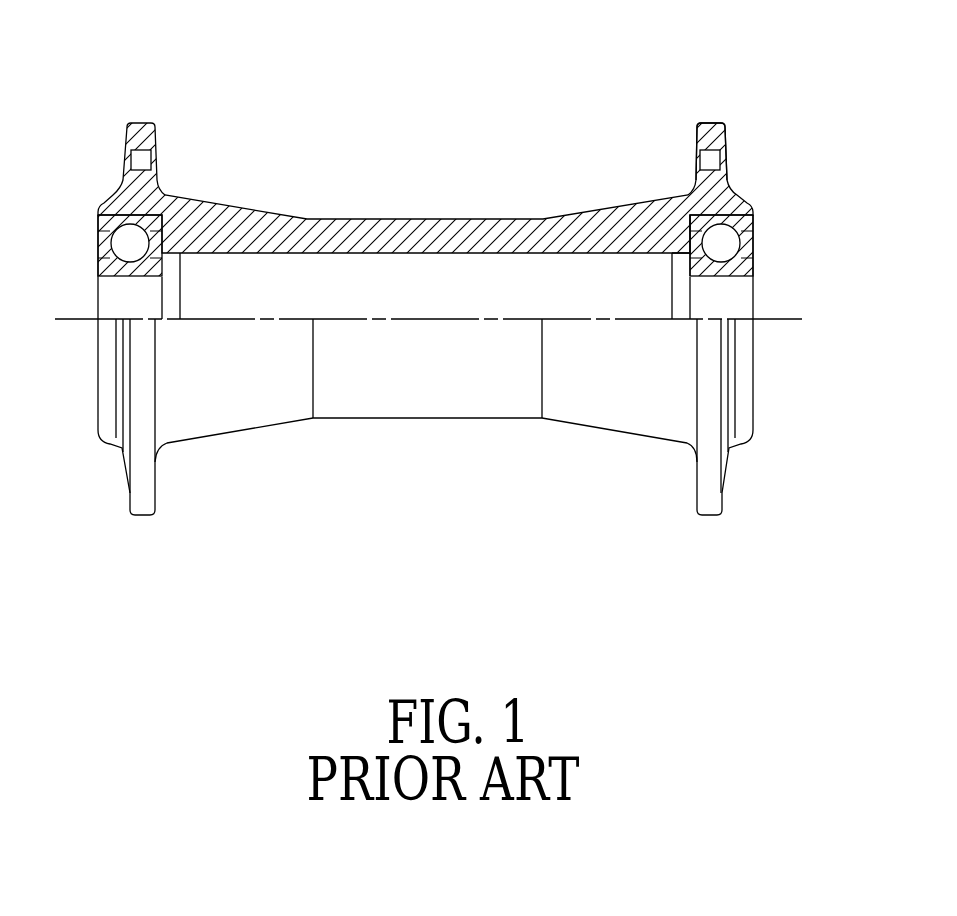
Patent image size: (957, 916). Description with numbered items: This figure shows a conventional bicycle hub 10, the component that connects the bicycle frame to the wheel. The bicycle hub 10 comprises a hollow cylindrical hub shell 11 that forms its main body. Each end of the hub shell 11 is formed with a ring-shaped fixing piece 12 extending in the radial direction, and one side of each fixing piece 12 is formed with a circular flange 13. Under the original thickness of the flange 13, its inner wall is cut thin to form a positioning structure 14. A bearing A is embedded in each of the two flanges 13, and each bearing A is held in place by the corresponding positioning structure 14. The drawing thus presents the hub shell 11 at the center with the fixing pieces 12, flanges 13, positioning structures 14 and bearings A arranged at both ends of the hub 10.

The bicycle hub 10 is at (352, 150).
The hub shell 11 is at (428, 230).
The fixing piece 12 is at (713, 128).
The flange 13 is at (727, 210).
The positioning structure 14 is at (690, 237).
The bearing A is at (770, 252).